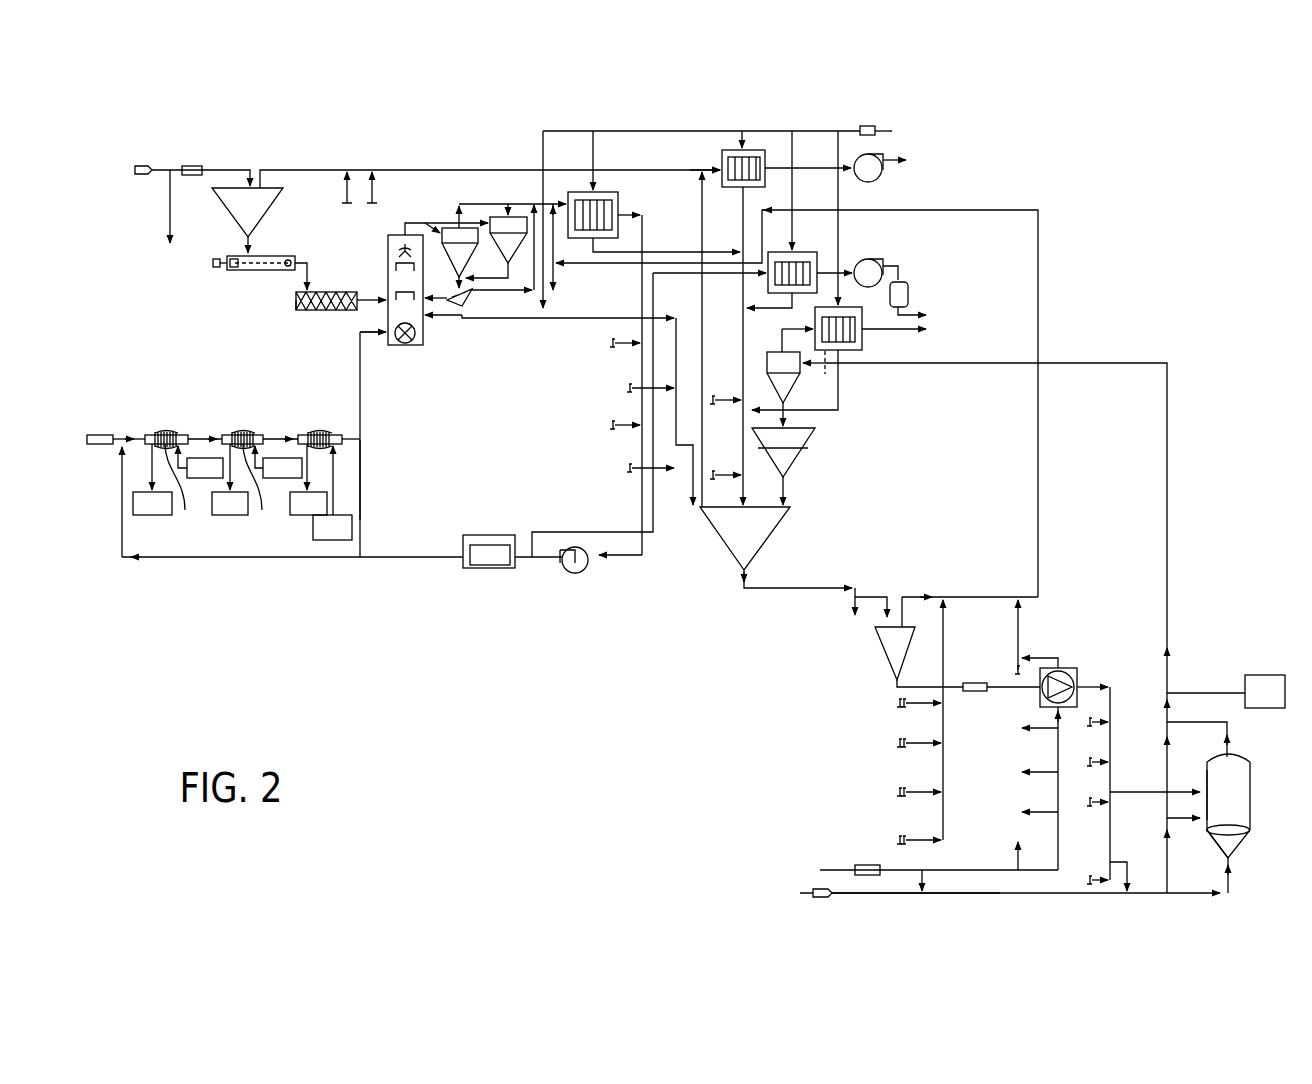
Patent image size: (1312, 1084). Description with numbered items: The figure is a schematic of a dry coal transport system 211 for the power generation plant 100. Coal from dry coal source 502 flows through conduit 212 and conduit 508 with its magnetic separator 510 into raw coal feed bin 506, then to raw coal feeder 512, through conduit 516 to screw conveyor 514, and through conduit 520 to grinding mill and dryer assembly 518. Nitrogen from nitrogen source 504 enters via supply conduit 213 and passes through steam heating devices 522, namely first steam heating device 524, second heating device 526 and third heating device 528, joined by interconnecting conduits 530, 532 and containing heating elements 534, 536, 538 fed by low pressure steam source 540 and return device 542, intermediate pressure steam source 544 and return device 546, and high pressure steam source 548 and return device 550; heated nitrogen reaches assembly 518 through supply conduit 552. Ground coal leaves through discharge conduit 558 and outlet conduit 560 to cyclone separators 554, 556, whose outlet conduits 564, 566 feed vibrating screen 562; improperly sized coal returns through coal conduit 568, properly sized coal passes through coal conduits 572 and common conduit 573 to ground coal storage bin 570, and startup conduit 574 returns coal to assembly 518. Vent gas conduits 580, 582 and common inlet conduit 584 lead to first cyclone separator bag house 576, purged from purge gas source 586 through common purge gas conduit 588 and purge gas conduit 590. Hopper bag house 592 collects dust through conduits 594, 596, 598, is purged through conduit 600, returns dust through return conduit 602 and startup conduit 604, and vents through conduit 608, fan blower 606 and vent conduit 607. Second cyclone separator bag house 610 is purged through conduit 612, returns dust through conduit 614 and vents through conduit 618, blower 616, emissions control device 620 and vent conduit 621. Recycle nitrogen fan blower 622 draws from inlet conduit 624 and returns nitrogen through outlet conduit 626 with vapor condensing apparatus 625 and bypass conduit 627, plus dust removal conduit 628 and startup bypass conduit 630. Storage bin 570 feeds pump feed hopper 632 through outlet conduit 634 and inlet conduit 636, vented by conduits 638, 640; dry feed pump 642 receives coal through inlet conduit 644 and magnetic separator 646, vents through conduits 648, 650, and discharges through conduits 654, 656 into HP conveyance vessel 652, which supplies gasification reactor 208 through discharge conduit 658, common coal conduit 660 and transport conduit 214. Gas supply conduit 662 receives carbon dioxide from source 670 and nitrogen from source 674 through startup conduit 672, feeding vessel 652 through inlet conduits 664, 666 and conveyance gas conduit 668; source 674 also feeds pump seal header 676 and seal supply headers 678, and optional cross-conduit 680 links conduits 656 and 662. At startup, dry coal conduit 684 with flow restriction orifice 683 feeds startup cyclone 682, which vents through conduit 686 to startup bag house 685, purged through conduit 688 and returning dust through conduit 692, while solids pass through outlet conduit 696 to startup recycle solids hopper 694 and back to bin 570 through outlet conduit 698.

The IGCC power generation plant 100 is at (1137, 166).
The gasification reactor 208 is at (1251, 702).
The dry coal transport system 211 is at (135, 202).
The conduit 212 is at (170, 170).
The nitrogen supply conduit 213 is at (133, 437).
The transport conduit 214 is at (1208, 693).
The dry coal source 502 is at (143, 166).
The nitrogen gas source 504 is at (100, 444).
The raw coal feed bin 506 is at (268, 210).
The conduit 508 is at (250, 170).
The raw coal magnetic separator 510 is at (192, 166).
The raw coal feeder 512 is at (255, 242).
The screw conveyor 514 is at (297, 310).
The third raw coal conduit 516 is at (307, 280).
The grinding mill and dryer assembly 518 is at (392, 235).
The fourth raw coal conduit 520 is at (372, 300).
The steam heating devices 522 is at (190, 378).
The first steam heating device 524 is at (152, 435).
The second steam heating device 526 is at (230, 435).
The third steam heating device 528 is at (307, 435).
The first nitrogen interconnecting conduit 530 is at (205, 437).
The second nitrogen interconnecting conduit 532 is at (282, 437).
The heating element 534 is at (186, 486).
The heating element 536 is at (264, 486).
The heating element 538 is at (328, 435).
The low pressure steam source 540 is at (192, 477).
The low pressure steam return device 542 is at (139, 512).
The intermediate pressure steam source 544 is at (269, 477).
The intermediate pressure steam return device 546 is at (217, 512).
The high pressure steam source 548 is at (319, 536).
The high pressure steam return device 550 is at (295, 512).
The heated conveying gas supply conduit 552 is at (360, 352).
The first cyclone separator 554 is at (460, 250).
The second cyclone separator 556 is at (508, 238).
The first grinding mill and dryer assembly discharge conduit 558 is at (423, 222).
The second grinding mill and dryer assembly outlet conduit 560 is at (459, 212).
The vibrating screen 562 is at (470, 300).
The first cyclone separator outlet conduit 564 is at (457, 283).
The second cyclone separator outlet conduit 566 is at (506, 270).
The coal conduit 568 is at (462, 320).
The ground coal storage bin 570 is at (757, 536).
The properly-sized coal conduit 572 is at (570, 318).
The common coal conduit 573 is at (688, 480).
The properly-sized coal startup conduit 574 is at (430, 330).
The first cyclone separator bag house 576 is at (569, 192).
The second cyclone separator vent gas conduit 580 is at (508, 202).
The vibrating screen vent gas conduit 582 is at (534, 292).
The common bag house inlet conduit 584 is at (540, 190).
The bag house purge gas source 586 is at (892, 131).
The common purge gas conduit 588 is at (552, 132).
The first bag house purge gas conduit 590 is at (597, 149).
The hopper bag house 592 is at (752, 150).
The hopper coal dust conduit 594 is at (275, 170).
The common coal dust conduit 596 is at (713, 170).
The storage bin coal dust collection conduit 598 is at (700, 202).
The second bag house purge gas conduit 600 is at (742, 131).
The storage bin coal dust return conduit 602 is at (742, 232).
The coal dust return startup conduit 604 is at (690, 251).
The hopper fan blower 606 is at (885, 172).
The vent conduit 607 is at (908, 158).
The hopper bag house vent conduit 608 is at (836, 148).
The second cyclone separator bag house 610 is at (808, 253).
The third bag house purge gas conduit 612 is at (794, 190).
The coal dust return conduit 614 is at (745, 308).
The cyclone separator fan blower 616 is at (885, 263).
The cyclone separator bag house vent conduit 618 is at (835, 272).
The emissions control device 620 is at (908, 290).
The vent conduit 621 is at (920, 315).
The recycle nitrogen fan blower 622 is at (568, 573).
The recycle nitrogen fan blower inlet conduit 624 is at (636, 212).
The vapor condensing apparatus 625 is at (476, 565).
The recycle nitrogen fan blower outlet conduit 626 is at (435, 558).
The vapor condensing apparatus bypass conduit 627 is at (488, 535).
The recycle nitrogen coal dust removal conduit 628 is at (658, 276).
The steam heating device startup bypass conduit 630 is at (362, 480).
The pump feed hopper 632 is at (882, 640).
The ground coal storage bin outlet conduit 634 is at (765, 588).
The pump feed hopper inlet conduit 636 is at (868, 597).
The pump feed hopper vent conduit 638 is at (925, 597).
The common pump and hopper vent conduit 640 is at (905, 210).
The dry feed pump 642 is at (1078, 670).
The dry feed pump inlet conduit 644 is at (940, 686).
The pump feed magnetic separator 646 is at (975, 683).
The dry pump startup vent conduit 648 is at (1045, 658).
The common dry pump startup vent conduit 650 is at (1022, 614).
The HP conveyance vessel 652 is at (1214, 796).
The dry feed pump discharge conduit 654 is at (1110, 686).
The common dry feed pump discharge conduit 656 is at (1111, 702).
The discharge conduit 658 is at (1235, 757).
The common coal conduit 660 is at (1167, 722).
The common HP conveyance gas supply conduit 662 is at (905, 893).
The first HP conveyance vessel gas inlet conduit 664 is at (1230, 885).
The second HP conveyance vessel gas inlet conduit 666 is at (1208, 832).
The conveyance gas conduit 668 is at (1170, 745).
The compressed recycled carbon dioxide source 670 is at (800, 892).
The startup nitrogen conduit 672 is at (925, 884).
The nitrogen source 674 is at (835, 870).
The common pump seal header 676 is at (980, 870).
The pump seal supply header 678 is at (1035, 728).
The cross-conduit 680 is at (1120, 862).
The startup cyclone 682 is at (783, 377).
The startup flow restriction orifice 683 is at (823, 375).
The startup dry coal conduit 684 is at (952, 365).
The startup bag house 685 is at (850, 308).
The gas vent conduit 686 is at (840, 146).
The gas purge conduit 688 is at (885, 334).
The startup bag house coal dust return conduit 692 is at (840, 386).
The startup recycle solids hopper 694 is at (783, 451).
The startup cyclone outlet conduit 696 is at (790, 414).
The startup recycle solids hopper outlet conduit 698 is at (787, 486).